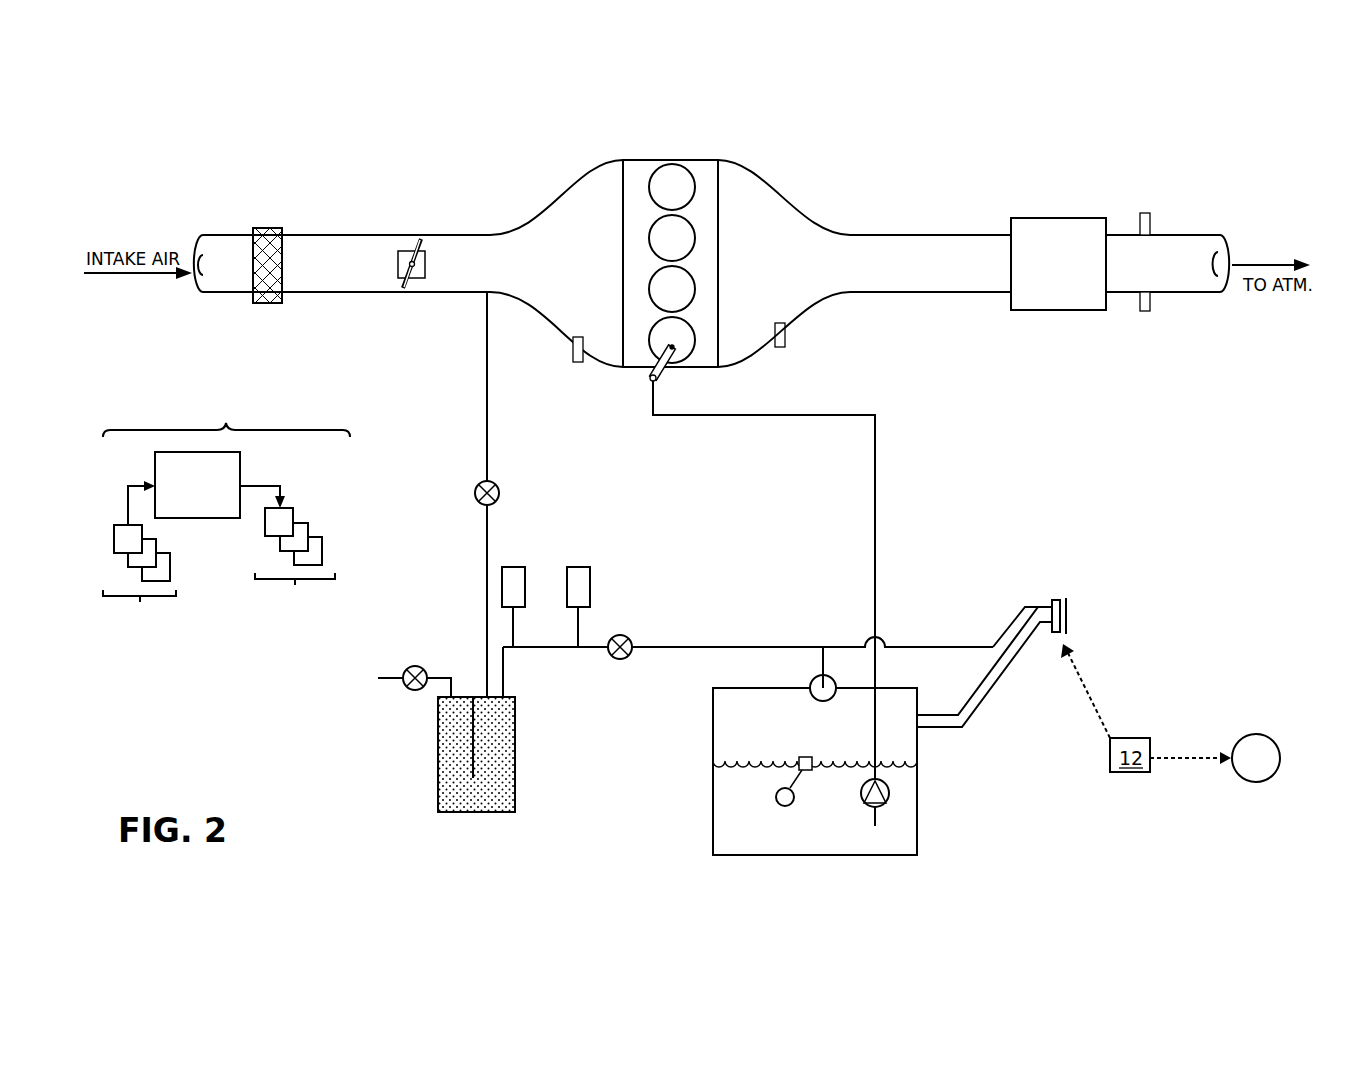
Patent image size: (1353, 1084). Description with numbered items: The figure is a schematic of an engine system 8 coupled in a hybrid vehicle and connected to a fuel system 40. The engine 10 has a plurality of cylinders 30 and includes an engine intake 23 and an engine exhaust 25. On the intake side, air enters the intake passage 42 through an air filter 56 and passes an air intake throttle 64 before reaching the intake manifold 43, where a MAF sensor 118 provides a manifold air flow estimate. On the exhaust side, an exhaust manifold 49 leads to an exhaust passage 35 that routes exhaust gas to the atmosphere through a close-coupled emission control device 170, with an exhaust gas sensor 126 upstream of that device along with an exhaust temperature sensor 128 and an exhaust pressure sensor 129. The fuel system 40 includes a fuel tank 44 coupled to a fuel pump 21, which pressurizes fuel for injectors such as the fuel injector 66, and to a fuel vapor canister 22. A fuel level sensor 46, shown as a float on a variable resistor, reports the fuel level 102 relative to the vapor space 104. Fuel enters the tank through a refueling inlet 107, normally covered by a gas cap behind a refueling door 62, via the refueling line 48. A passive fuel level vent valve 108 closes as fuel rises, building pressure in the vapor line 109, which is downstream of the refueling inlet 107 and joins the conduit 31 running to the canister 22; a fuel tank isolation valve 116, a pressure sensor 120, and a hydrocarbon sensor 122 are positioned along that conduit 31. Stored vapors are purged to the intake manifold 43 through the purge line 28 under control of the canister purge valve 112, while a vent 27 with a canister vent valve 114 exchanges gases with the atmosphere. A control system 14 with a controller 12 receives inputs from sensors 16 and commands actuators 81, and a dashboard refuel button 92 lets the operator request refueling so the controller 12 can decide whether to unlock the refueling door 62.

The engine system 8 is at (1072, 172).
The engine 10 is at (718, 246).
The controller 12 is at (197, 485).
The control system 14 is at (226, 408).
The sensors 16 is at (140, 562).
The fuel pump 21 is at (889, 798).
The fuel vapor canister 22 is at (500, 812).
The engine intake 23 is at (547, 182).
The engine exhaust 25 is at (833, 190).
The vent 27 is at (385, 678).
The purge line 28 is at (490, 425).
The cylinders 30 is at (690, 180).
The conduit 31 is at (725, 647).
The exhaust passage 35 is at (1196, 235).
The fuel system 40 is at (965, 838).
The intake passage 42 is at (233, 292).
The intake manifold 43 is at (590, 274).
The fuel tank 44 is at (713, 695).
The fuel level sensor 46 is at (812, 771).
The refueling line 48 is at (988, 702).
The exhaust manifold 49 is at (798, 274).
The air filter 56 is at (268, 229).
The refueling door 62 is at (1069, 613).
The air intake throttle 64 is at (423, 260).
The fuel injector 66 is at (666, 370).
The actuators 81 is at (291, 557).
The refuel button 92 is at (1268, 768).
The fuel level 102 is at (765, 767).
The vapor space 104 is at (803, 738).
The refueling inlet 107 is at (1056, 598).
The fuel level vent valve 108 is at (815, 680).
The vapor line 109 is at (1012, 625).
The canister purge valve 112 is at (496, 488).
The canister vent valve 114 is at (421, 668).
The fuel tank isolation valve 116 is at (627, 640).
The MAF sensor 118 is at (572, 345).
The pressure sensor 120 is at (525, 578).
The hydrocarbon sensor 122 is at (590, 578).
The exhaust gas sensor 126 is at (785, 330).
The exhaust temperature sensor 128 is at (1145, 311).
The exhaust pressure sensor 129 is at (1145, 213).
The emission control device 170 is at (1077, 275).